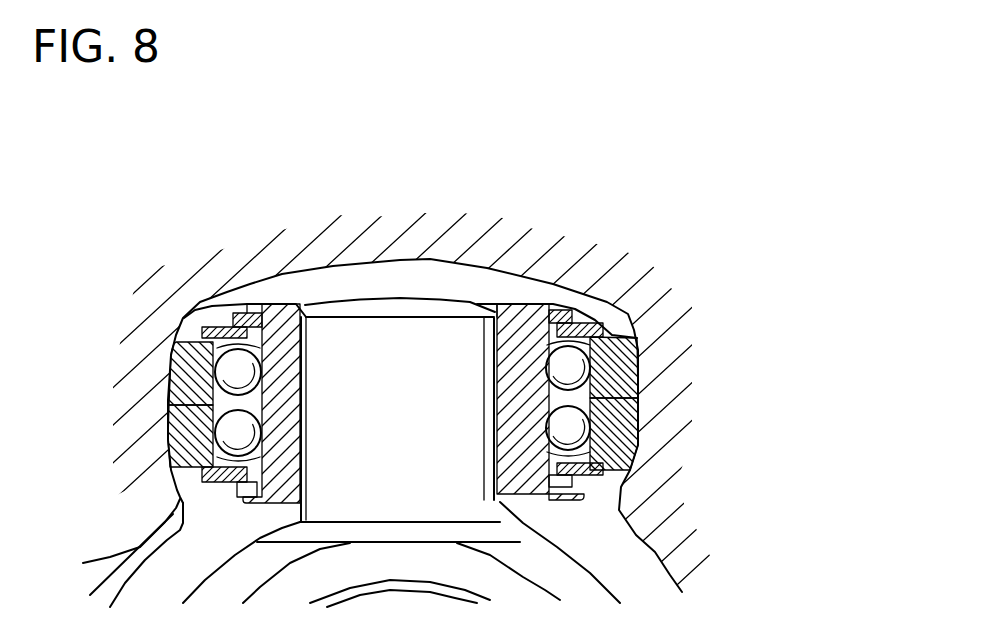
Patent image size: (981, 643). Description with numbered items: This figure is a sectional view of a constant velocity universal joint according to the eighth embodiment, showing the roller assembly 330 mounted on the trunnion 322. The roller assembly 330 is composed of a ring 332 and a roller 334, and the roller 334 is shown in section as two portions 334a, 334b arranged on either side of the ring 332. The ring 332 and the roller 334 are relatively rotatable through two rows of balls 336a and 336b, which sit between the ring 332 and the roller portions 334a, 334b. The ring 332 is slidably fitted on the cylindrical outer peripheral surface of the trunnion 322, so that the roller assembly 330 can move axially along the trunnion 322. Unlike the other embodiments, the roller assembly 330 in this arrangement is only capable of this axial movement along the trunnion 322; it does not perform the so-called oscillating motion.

The trunnion 322 is at (434, 426).
The roller assembly 330 is at (648, 312).
The ring 332 is at (517, 306).
The roller 334 is at (515, 393).
The roller 334a is at (628, 417).
The roller 334b is at (628, 381).
The balls 336a is at (585, 441).
The balls 336b is at (577, 367).